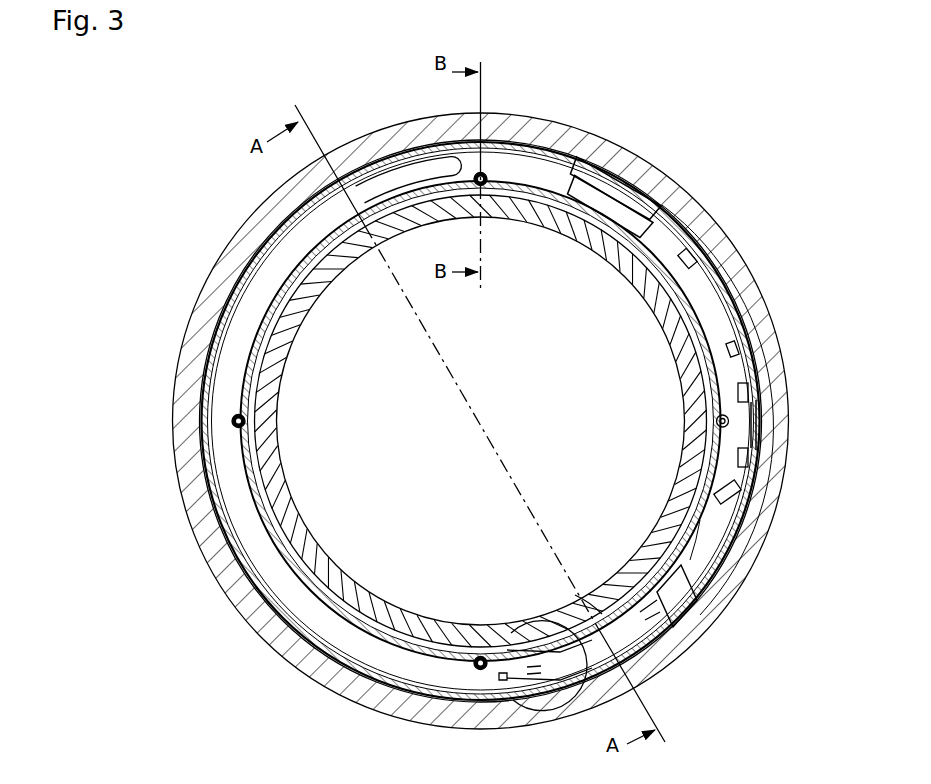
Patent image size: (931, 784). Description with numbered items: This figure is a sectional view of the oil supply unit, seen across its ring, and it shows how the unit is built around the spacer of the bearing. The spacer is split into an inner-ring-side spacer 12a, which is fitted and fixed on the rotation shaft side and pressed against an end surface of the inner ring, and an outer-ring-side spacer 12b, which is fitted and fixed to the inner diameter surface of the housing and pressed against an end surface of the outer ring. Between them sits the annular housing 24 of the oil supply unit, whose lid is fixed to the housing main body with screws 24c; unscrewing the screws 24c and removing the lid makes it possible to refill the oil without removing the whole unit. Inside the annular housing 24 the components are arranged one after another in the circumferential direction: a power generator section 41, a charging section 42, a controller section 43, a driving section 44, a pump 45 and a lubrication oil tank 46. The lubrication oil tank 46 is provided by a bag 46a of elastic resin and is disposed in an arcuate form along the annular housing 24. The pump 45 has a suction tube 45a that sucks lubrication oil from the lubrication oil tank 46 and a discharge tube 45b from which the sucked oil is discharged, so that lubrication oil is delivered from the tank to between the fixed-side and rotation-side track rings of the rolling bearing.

The inner-ring-side spacer 12a is at (341, 262).
The outer-ring-side spacer 12b is at (377, 150).
The annular housing 24 is at (536, 186).
The screws 24c is at (246, 421).
The power generator section 41 is at (633, 178).
The charging section 42 is at (718, 292).
The controller section 43 is at (753, 433).
The driving section 44 is at (705, 538).
The pump 45 is at (677, 593).
The suction tube 45a is at (625, 657).
The discharge tube 45b is at (578, 595).
The lubrication oil tank 46 is at (260, 290).
The bag 46a is at (222, 365).